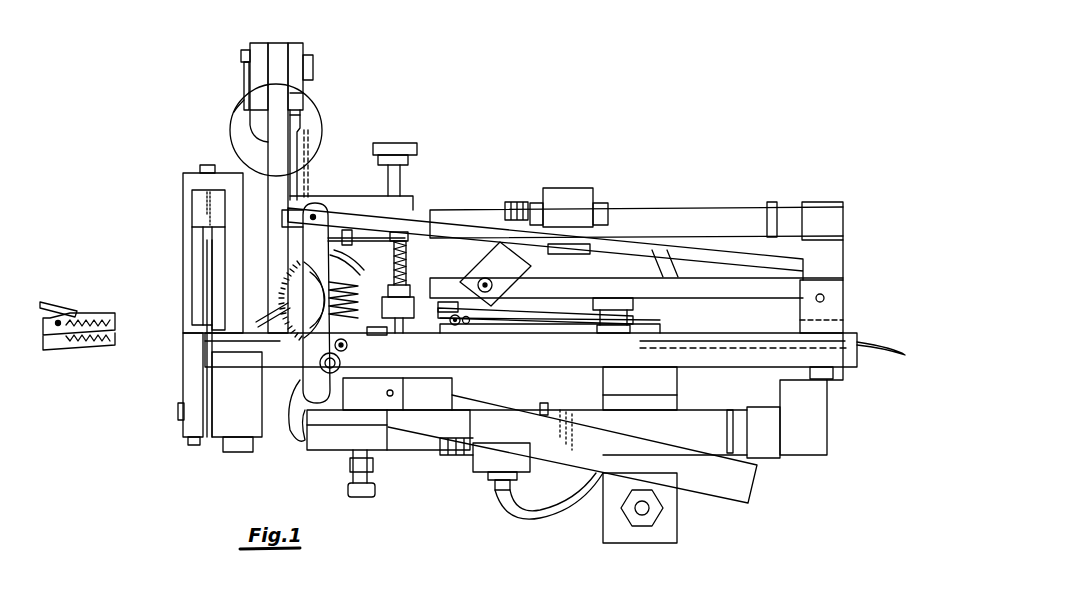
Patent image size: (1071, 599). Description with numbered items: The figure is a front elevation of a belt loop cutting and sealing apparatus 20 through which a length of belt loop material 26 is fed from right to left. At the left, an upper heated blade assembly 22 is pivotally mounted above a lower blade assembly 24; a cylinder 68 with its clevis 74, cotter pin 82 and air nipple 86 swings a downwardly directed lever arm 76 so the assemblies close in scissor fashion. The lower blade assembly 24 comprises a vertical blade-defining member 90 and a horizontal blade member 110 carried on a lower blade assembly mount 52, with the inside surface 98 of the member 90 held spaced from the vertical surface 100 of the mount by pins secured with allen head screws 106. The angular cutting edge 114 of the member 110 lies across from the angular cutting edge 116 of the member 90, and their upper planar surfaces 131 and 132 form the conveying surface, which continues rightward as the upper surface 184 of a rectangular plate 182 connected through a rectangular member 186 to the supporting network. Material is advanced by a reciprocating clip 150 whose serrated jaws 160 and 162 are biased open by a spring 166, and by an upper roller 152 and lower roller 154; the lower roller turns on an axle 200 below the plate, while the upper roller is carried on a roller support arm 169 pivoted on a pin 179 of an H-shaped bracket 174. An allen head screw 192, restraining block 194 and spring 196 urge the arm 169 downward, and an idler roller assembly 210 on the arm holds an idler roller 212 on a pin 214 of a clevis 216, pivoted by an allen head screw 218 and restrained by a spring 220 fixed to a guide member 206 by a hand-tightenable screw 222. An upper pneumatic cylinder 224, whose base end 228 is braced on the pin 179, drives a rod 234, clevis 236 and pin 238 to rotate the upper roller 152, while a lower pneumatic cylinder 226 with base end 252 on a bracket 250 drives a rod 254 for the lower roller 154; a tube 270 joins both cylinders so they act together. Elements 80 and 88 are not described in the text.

The belt loop cutting and sealing apparatus 20 is at (772, 130).
The upper heated blade assembly 22 is at (181, 210).
The lower blade assembly 24 is at (181, 376).
The belt loop material 26 is at (231, 341).
The lower blade assembly mount 52 is at (215, 440).
The cylinder 68 is at (231, 122).
The clevis 74 is at (304, 94).
The lever arm 76 is at (300, 115).
The tab 80 is at (313, 62).
The cotter pin 82 is at (243, 100).
The nipple 86 is at (297, 43).
The left post 88 is at (259, 43).
The blade-defining member 90 is at (181, 438).
The inside surface 98 is at (212, 388).
The vertical surface 100 is at (208, 402).
The allen head screws 106 is at (195, 446).
The horizontal blade member 110 is at (262, 437).
The angular cutting edge 114 is at (213, 323).
The angular cutting edge 116 is at (204, 339).
The upper planar surface 131 is at (205, 340).
The upper rectangular surface 132 is at (300, 402).
The reciprocating clip 150 is at (95, 300).
The upper roller 152 is at (345, 268).
The lower roller 154 is at (298, 430).
The serrated jaw 160 is at (114, 311).
The serrated jaw 162 is at (97, 346).
The spring 166 is at (332, 257).
The roller support arm 169 is at (629, 276).
The H-shaped bracket 174 is at (848, 306).
The pin 179 is at (826, 297).
The rectangular plate 182 is at (849, 369).
The upper surface 184 is at (720, 340).
The rectangular member 186 is at (679, 385).
The allen head screw 192 is at (356, 258).
The restraining block 194 is at (401, 318).
The spring 196 is at (406, 262).
The axle 200 is at (346, 367).
The guide member 206 is at (590, 334).
The idler roller assembly 210 is at (512, 240).
The idler roller 212 is at (449, 301).
The pin 214 is at (466, 325).
The clevis 216 is at (492, 312).
The allen head screw 218 is at (528, 268).
The spring 220 is at (545, 322).
The hand-tightenable screw 222 is at (634, 301).
The upper pneumatic cylinder 224 is at (596, 189).
The lower pneumatic cylinder 226 is at (476, 473).
The base end 228 is at (789, 201).
The rod 234 is at (492, 209).
The clevis 236 is at (387, 143).
The pin 238 is at (320, 197).
The bracket 250 is at (828, 457).
The base end 252 is at (768, 467).
The rod 254 is at (415, 451).
The tube 270 is at (566, 514).